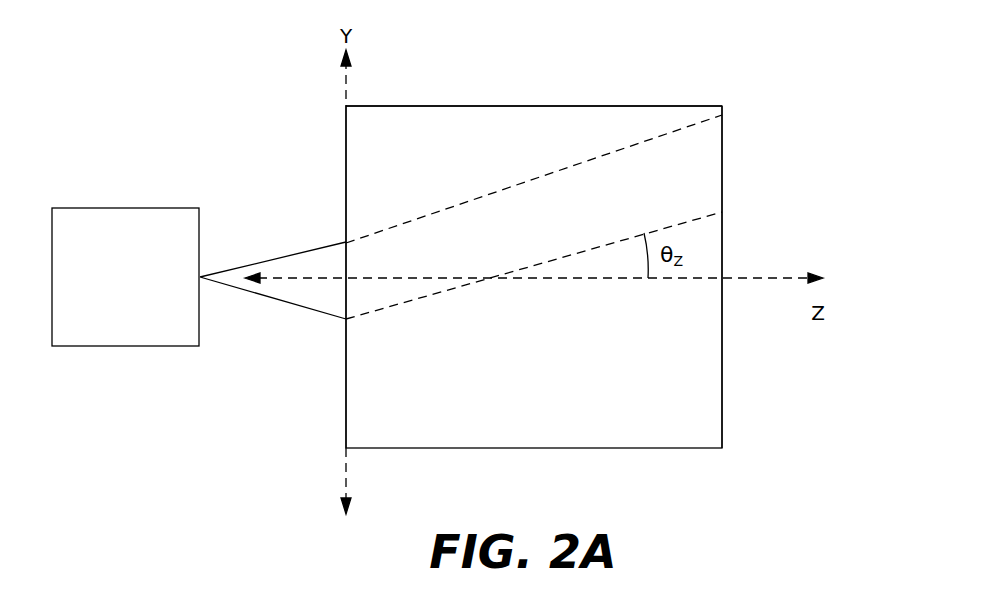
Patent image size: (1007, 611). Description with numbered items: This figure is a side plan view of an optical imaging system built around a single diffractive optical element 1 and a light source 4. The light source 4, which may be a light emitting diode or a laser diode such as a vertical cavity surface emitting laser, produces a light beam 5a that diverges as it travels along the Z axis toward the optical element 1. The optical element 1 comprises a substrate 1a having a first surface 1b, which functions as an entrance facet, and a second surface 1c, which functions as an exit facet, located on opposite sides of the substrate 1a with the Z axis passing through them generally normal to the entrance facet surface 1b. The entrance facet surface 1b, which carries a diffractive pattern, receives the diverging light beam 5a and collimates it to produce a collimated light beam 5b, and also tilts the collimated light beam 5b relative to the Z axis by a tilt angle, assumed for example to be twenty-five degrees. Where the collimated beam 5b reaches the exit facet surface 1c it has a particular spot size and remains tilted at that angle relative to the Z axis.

The diffractive optical element 1 is at (662, 72).
The substrate 1a is at (499, 106).
The first surface 1b is at (346, 347).
The second surface 1c is at (722, 212).
The light source 4 is at (125, 277).
The light beam 5a is at (257, 263).
The collimated light beam 5b is at (547, 175).